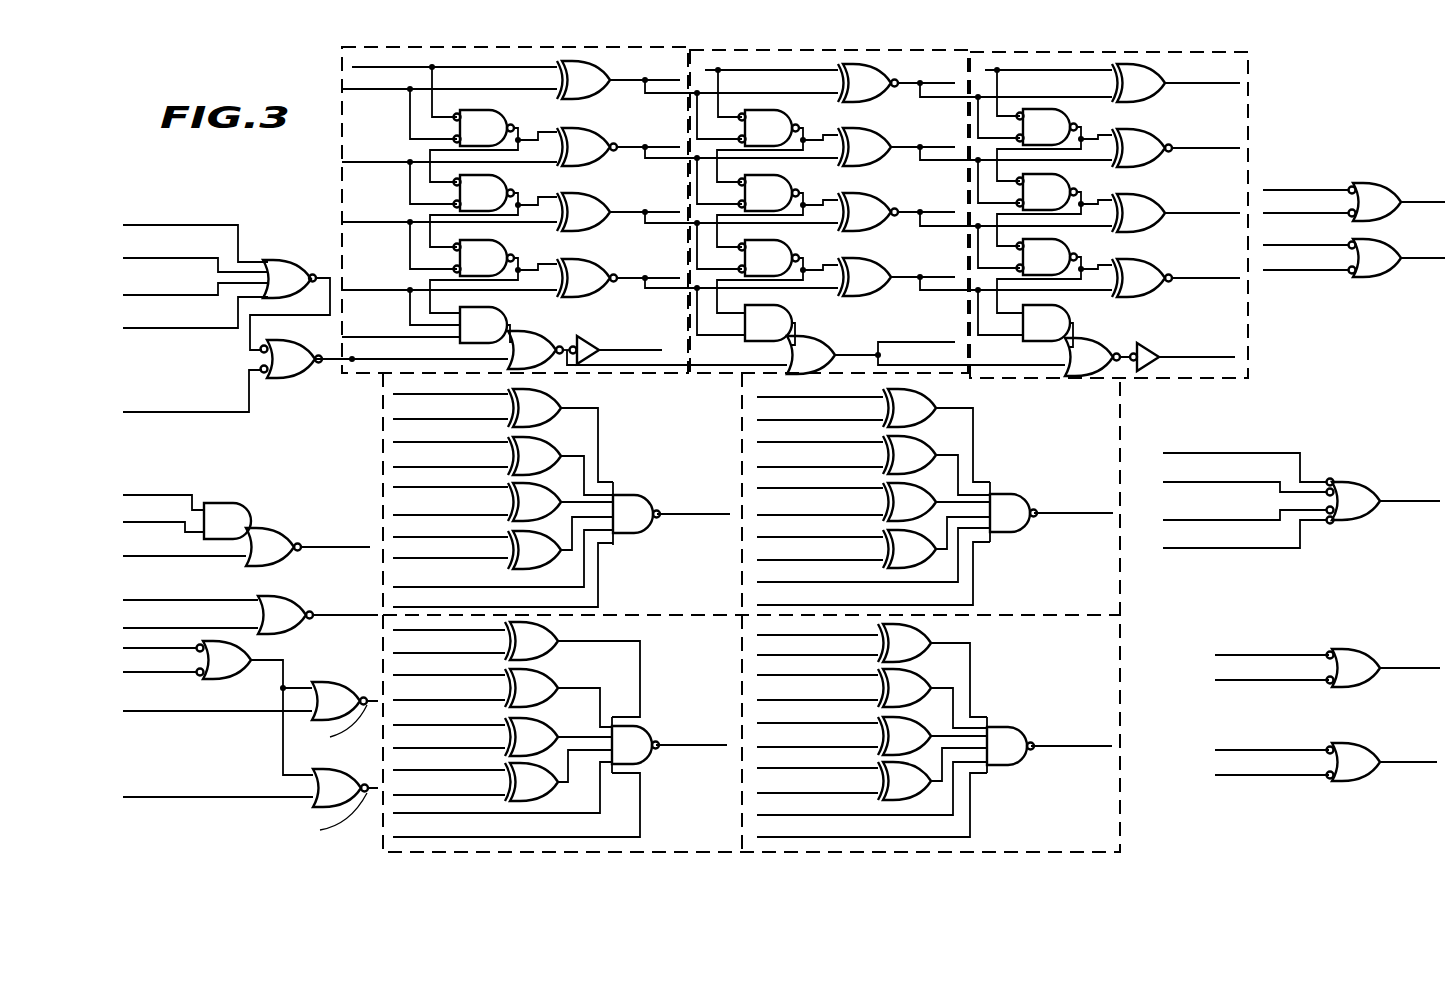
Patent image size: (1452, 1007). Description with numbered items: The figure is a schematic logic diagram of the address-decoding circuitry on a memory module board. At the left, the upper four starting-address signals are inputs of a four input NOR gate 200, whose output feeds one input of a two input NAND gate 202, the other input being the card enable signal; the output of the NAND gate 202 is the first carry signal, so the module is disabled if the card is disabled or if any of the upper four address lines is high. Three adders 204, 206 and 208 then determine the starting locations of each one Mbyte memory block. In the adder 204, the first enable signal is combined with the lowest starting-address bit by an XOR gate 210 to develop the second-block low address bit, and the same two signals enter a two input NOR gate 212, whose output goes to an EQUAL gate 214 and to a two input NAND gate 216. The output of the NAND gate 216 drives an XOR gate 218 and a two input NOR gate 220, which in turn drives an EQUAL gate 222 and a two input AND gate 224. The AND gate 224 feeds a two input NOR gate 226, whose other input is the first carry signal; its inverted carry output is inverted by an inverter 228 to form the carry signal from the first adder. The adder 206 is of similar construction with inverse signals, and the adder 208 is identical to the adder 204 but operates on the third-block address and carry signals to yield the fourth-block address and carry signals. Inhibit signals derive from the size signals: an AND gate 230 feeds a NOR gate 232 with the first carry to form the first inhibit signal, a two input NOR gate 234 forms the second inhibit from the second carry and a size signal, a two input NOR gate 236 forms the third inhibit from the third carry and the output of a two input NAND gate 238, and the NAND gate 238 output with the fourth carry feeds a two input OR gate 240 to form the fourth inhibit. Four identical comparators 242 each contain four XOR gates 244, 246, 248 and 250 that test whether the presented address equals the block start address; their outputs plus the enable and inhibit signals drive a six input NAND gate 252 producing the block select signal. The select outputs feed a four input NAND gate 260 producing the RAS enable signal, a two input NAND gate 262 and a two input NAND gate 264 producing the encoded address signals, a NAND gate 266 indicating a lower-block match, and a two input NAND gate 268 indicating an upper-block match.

The four input NOR gate 200 is at (272, 260).
The two input NAND gate 202 is at (290, 380).
The adder 204 is at (642, 50).
The adder 206 is at (830, 50).
The adder 208 is at (1107, 52).
The XOR gate 210 is at (572, 61).
The two input NOR gate 212 is at (500, 118).
The EQUAL gate 214 is at (587, 128).
The two input NAND gate 216 is at (500, 183).
The XOR gate 218 is at (587, 193).
The two input NOR gate 220 is at (500, 248).
The EQUAL gate 222 is at (587, 259).
The two input AND gate 224 is at (510, 302).
The two input NOR gate 226 is at (530, 334).
The inverter 228 is at (597, 333).
The AND gate 230 is at (243, 502).
The NOR gate 232 is at (277, 530).
The two input NOR gate 234 is at (292, 597).
The two input NOR gate 236 is at (322, 683).
The two input NAND gate 238 is at (212, 678).
The two input OR gate 240 is at (310, 808).
The comparator 242 is at (1147, 680).
The XOR gate 244 is at (557, 395).
The XOR gate 246 is at (549, 432).
The XOR gate 248 is at (546, 478).
The XOR gate 250 is at (539, 526).
The six input NAND gate 252 is at (633, 495).
The four input NAND gate 260 is at (1350, 482).
The two input NAND gate 262 is at (1350, 745).
The two input NAND gate 264 is at (1350, 650).
The NAND gate 266 is at (1377, 277).
The two input NAND gate 268 is at (1363, 183).